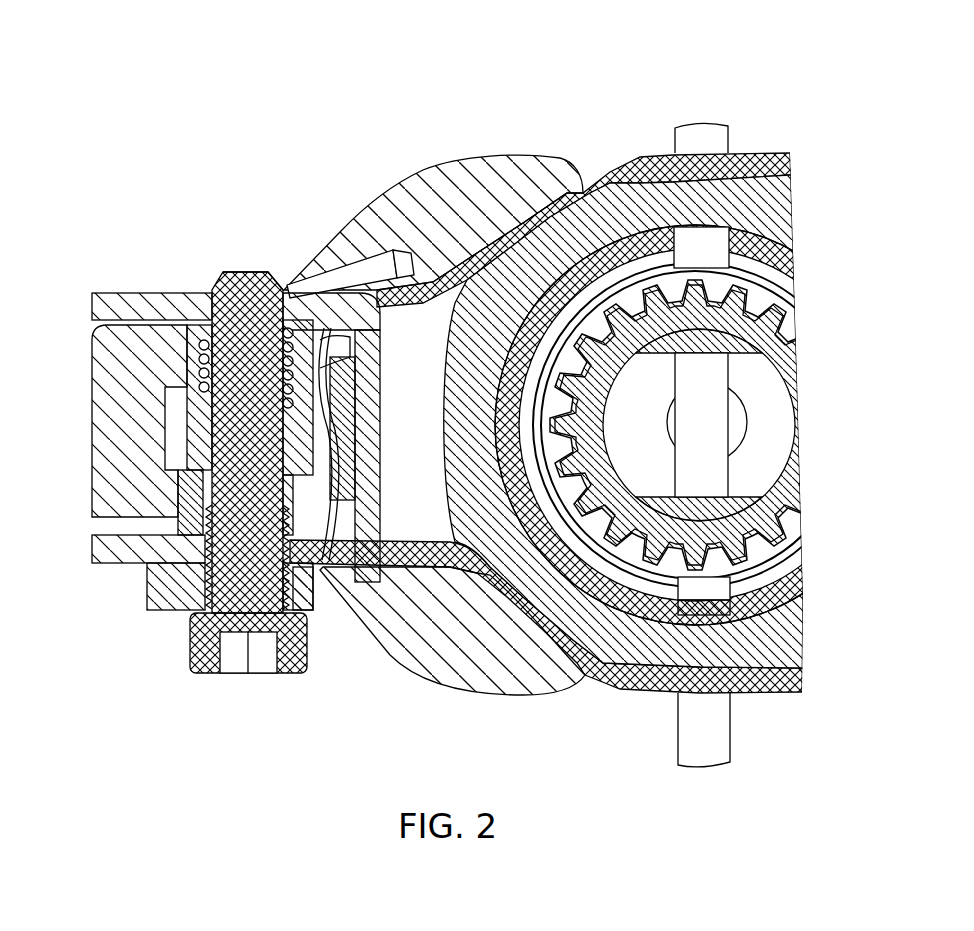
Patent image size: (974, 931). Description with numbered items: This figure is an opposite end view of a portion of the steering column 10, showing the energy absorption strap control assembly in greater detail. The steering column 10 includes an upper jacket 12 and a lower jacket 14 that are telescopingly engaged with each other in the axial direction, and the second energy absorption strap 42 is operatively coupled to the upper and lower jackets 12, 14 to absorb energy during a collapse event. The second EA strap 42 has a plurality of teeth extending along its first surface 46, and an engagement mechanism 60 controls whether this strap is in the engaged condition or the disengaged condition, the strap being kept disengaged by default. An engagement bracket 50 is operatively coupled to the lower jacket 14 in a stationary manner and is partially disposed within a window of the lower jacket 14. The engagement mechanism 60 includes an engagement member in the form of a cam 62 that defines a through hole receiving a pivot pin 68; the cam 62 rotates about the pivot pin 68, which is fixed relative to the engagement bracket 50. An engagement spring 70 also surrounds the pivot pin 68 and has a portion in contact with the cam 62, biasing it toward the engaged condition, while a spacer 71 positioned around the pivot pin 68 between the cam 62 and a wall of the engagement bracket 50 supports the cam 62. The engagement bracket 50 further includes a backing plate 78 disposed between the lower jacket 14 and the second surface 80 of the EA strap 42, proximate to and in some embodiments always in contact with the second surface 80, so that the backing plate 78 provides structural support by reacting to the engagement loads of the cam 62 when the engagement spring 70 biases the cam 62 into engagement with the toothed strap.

The steering column 10 is at (905, 92).
The upper jacket 12 is at (762, 207).
The lower jacket 14 is at (616, 170).
The second energy absorption strap 42 is at (358, 395).
The first surface 46 is at (345, 352).
The engagement bracket 50 is at (118, 305).
The engagement mechanism 60 is at (203, 265).
The cam 62 is at (200, 428).
The pivot pin 68 is at (240, 568).
The engagement spring 70 is at (283, 290).
The spacer 71 is at (183, 490).
The backing plate 78 is at (362, 468).
The second surface 80 is at (355, 437).